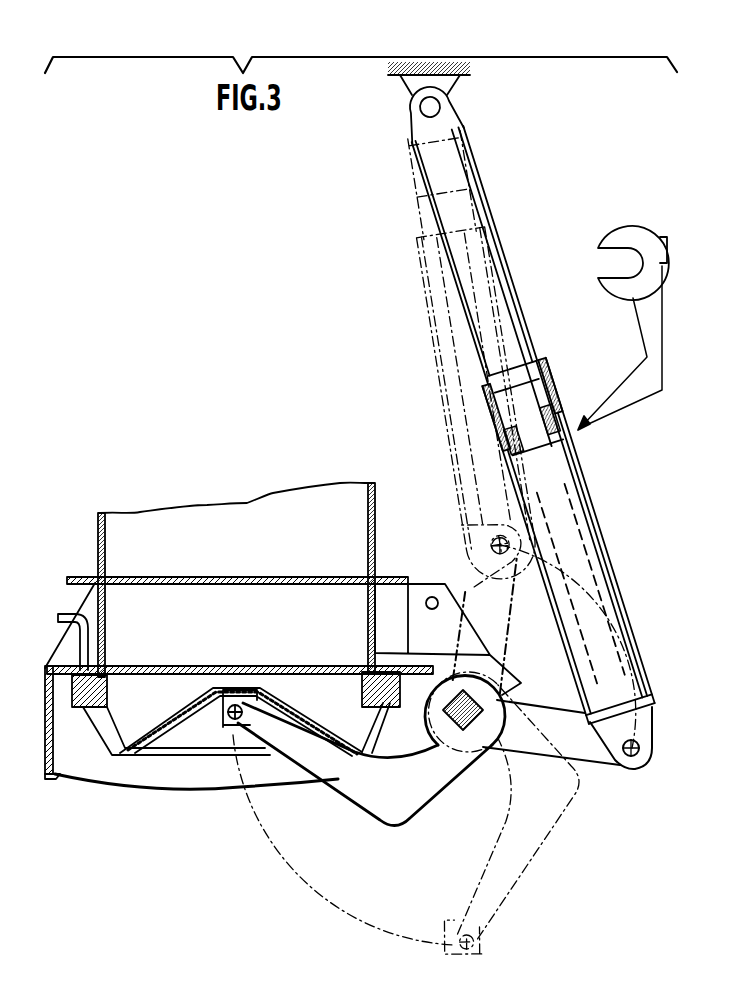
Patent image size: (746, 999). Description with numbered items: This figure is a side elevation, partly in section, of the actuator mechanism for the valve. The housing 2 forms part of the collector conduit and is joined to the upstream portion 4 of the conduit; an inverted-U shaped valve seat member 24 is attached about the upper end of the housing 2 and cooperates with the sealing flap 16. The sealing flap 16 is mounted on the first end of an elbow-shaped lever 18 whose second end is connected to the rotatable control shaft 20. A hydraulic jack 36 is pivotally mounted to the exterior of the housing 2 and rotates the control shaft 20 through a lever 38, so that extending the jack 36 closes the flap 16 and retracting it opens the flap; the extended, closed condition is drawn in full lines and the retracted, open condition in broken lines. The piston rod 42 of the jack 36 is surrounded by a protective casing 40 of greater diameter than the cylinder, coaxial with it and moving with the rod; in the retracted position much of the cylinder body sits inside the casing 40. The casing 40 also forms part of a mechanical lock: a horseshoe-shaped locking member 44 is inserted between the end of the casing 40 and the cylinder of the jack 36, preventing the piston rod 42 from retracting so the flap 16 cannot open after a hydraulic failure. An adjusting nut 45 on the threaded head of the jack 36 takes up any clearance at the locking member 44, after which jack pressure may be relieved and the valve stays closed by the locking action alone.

The housing 2 is at (60, 775).
The upstream portion of the collector conduit 4 is at (98, 529).
The sealing flap 16 is at (193, 737).
The lever 18 is at (340, 777).
The control shaft 20 is at (463, 732).
The valve seat member 24 is at (72, 688).
The hydraulic jack 36 is at (507, 224).
The lever 38 is at (600, 758).
The protective casing 40 is at (573, 452).
The piston rod 42 is at (540, 475).
The locking member 44 is at (622, 228).
The adjusting nut 45 is at (557, 417).